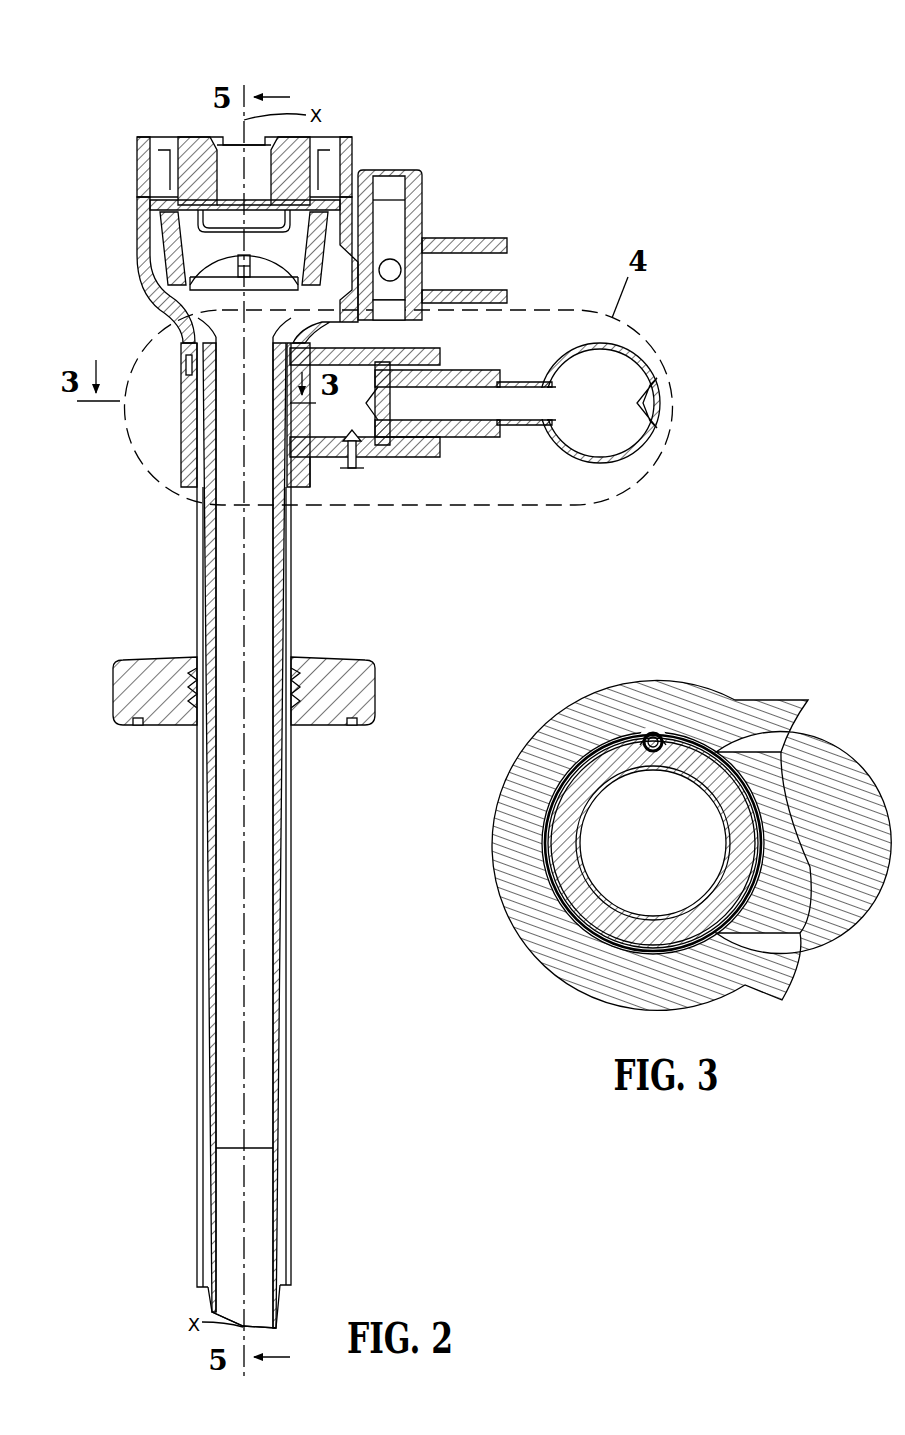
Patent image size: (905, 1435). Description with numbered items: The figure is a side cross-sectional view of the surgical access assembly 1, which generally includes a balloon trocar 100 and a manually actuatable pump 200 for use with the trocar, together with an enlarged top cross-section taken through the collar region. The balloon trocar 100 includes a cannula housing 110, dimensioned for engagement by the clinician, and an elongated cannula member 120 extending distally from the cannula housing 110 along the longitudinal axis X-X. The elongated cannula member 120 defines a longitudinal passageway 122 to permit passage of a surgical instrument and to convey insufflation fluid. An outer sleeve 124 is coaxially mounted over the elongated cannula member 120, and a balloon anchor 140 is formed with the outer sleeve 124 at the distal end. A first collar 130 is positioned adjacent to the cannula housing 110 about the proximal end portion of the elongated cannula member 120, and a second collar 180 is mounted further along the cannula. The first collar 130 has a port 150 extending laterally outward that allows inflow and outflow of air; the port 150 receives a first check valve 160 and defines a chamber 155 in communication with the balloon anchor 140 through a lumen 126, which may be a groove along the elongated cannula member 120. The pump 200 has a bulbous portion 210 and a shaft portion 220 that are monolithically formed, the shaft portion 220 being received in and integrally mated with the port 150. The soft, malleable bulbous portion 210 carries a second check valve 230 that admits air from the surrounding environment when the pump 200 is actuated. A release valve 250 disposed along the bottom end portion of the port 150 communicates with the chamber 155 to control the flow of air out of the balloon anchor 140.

In FIG. 2, the surgical access assembly 1 is at (564, 160).
In FIG. 2, the balloon trocar 100 is at (473, 199).
In FIG. 2, the cannula housing 110 is at (137, 200).
In FIG. 2, the elongated cannula member 120 is at (203, 1003).
In FIG. 3, the elongated cannula member 120 is at (590, 772).
In FIG. 2, the longitudinal passageway 122 is at (255, 84).
In FIG. 2, the outer sleeve 124 is at (292, 935).
In FIG. 3, the outer sleeve 124 is at (548, 940).
In FIG. 3, the lumen 126 is at (655, 730).
In FIG. 2, the first collar 130 is at (183, 372).
In FIG. 2, the balloon anchor 140 is at (292, 1215).
In FIG. 2, the port 150 is at (420, 457).
In FIG. 2, the chamber 155 is at (310, 430).
In FIG. 3, the chamber 155 is at (750, 763).
In FIG. 2, the first check valve 160 is at (415, 378).
In FIG. 2, the second collar 180 is at (113, 688).
In FIG. 2, the pump 200 is at (674, 334).
In FIG. 2, the bulbous portion 210 is at (642, 443).
In FIG. 2, the shaft portion 220 is at (516, 378).
In FIG. 2, the second check valve 230 is at (653, 385).
In FIG. 2, the release valve 250 is at (358, 484).